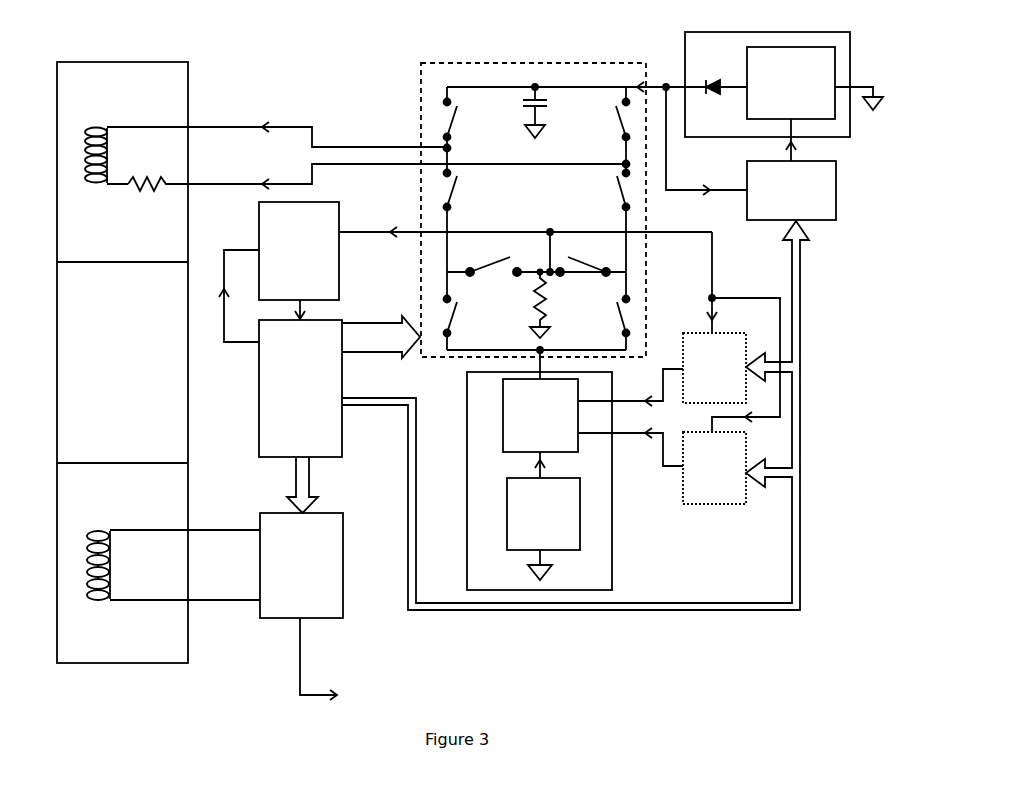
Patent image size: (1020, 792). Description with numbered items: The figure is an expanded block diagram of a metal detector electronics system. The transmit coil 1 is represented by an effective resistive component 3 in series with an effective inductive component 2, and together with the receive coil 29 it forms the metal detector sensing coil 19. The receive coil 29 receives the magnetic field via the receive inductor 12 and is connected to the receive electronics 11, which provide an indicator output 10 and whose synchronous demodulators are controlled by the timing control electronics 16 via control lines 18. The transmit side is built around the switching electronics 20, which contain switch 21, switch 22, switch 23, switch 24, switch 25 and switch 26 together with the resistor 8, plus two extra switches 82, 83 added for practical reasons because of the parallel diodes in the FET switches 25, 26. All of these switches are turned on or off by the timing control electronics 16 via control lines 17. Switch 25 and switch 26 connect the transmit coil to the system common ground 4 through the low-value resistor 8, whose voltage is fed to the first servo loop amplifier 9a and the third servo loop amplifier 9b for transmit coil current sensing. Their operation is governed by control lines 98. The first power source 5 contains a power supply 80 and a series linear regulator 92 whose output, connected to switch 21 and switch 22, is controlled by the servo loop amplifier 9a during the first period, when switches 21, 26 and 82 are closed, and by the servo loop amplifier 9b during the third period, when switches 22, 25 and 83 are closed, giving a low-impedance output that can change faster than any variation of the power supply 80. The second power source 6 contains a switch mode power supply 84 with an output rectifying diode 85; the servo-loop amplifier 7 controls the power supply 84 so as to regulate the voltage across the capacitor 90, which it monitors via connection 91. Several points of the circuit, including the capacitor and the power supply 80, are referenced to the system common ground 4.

The transmit coil 1 is at (122, 246).
The effective inductive component 2 is at (108, 165).
The effective resistive component 3 is at (135, 189).
The system common ground 4 is at (552, 334).
The first power source 5 is at (467, 478).
The second power source 6 is at (770, 32).
The servo-loop amplifier 7 is at (791, 190).
The resistor 8 is at (534, 306).
The first servo loop amplifier 9a is at (714, 368).
The third servo loop amplifier 9b is at (714, 468).
The indicator output 10 is at (331, 661).
The receive electronics 11 is at (301, 565).
The receive inductor 12 is at (111, 568).
The timing control electronics 16 is at (300, 388).
The control lines 17 is at (374, 323).
The control lines 18 is at (290, 480).
The metal detector sensing coil 19 is at (57, 380).
The switching electronics 20 is at (540, 63).
The switch 21 is at (458, 307).
The switch 22 is at (618, 312).
The switch 23 is at (455, 124).
The switch 24 is at (616, 120).
The switch 25 is at (500, 262).
The switch 26 is at (578, 260).
The receive coil 29 is at (122, 486).
The power supply 80 is at (543, 514).
The switch 82 is at (458, 188).
The switch 83 is at (618, 192).
The switch mode power supply 84 is at (791, 83).
The output rectifying diode 85 is at (705, 104).
The capacitor 90 is at (522, 104).
The connection 91 is at (520, 87).
The series linear regulator 92 is at (540, 415).
The control lines 98 is at (416, 457).